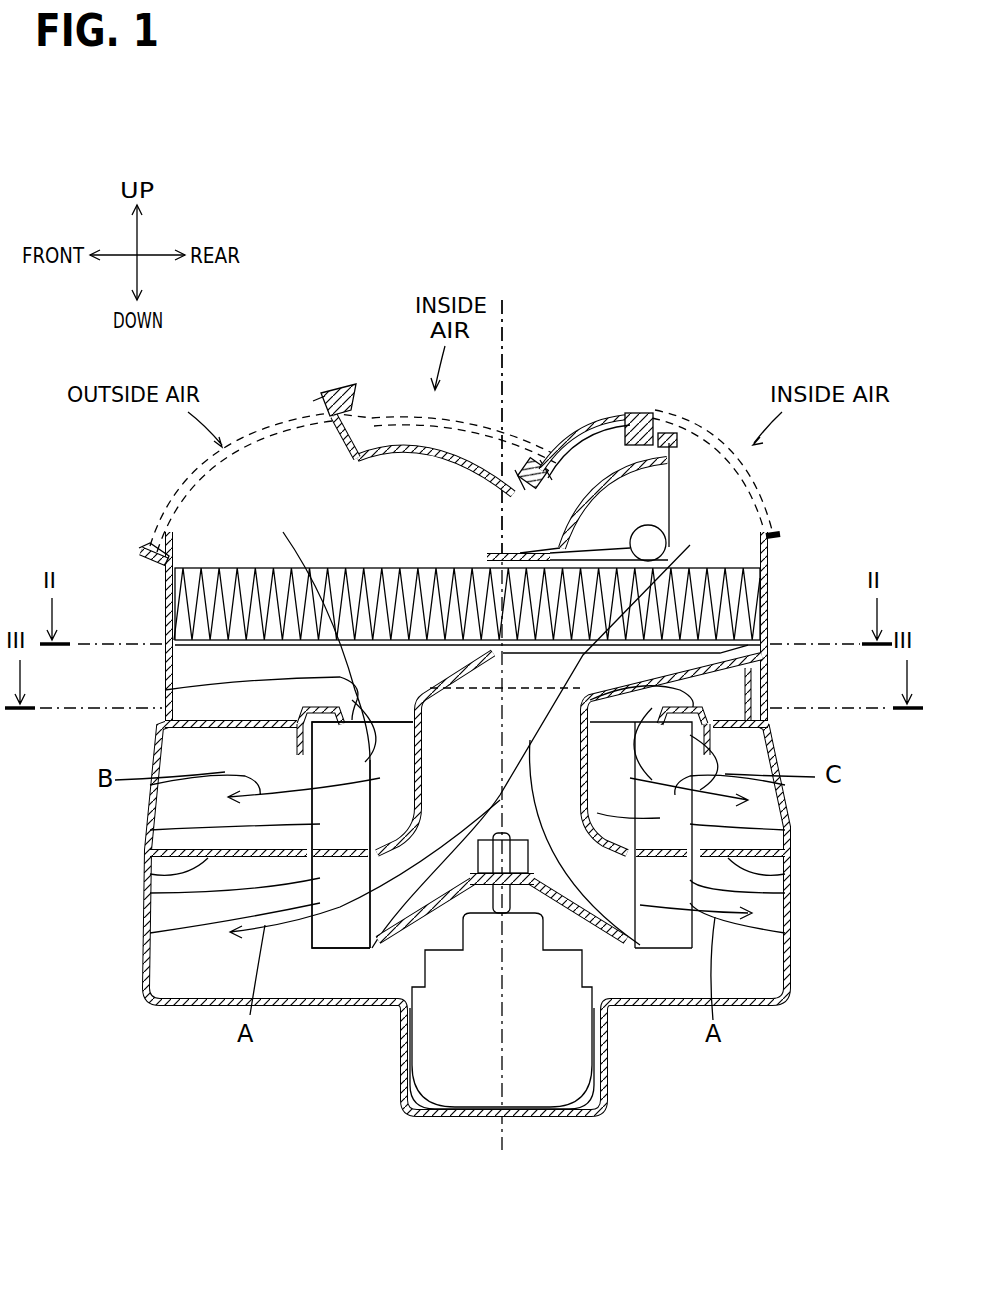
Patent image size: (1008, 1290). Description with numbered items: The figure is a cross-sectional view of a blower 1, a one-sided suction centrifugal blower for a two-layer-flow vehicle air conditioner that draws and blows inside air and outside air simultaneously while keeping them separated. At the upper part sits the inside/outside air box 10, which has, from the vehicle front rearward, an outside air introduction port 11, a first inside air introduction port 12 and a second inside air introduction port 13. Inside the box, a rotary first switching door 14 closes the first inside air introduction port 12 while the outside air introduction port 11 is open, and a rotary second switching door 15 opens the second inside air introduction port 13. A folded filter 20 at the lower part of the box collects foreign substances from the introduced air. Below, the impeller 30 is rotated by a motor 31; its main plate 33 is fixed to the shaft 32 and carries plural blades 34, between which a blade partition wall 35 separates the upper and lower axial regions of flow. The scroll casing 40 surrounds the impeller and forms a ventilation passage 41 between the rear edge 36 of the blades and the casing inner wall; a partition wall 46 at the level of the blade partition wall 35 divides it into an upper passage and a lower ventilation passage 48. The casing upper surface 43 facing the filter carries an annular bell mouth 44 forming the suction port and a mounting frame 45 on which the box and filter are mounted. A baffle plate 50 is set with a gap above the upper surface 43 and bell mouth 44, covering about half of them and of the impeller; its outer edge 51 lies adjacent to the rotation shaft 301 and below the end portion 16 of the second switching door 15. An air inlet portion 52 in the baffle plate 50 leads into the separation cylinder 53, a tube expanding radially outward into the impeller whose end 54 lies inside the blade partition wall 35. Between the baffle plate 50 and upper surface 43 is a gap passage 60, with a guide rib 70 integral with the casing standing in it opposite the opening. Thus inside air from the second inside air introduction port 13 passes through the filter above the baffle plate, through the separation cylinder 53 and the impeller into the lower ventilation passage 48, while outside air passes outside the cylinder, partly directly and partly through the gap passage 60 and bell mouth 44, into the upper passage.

The blower 1 is at (343, 225).
The inside/outside air box 10 is at (645, 415).
The outside air introduction port 11 is at (270, 428).
The first inside air introduction port 12 is at (388, 402).
The second inside air introduction port 13 is at (735, 418).
The first switching door 14 is at (420, 445).
The second switching door 15 is at (622, 420).
The end portion 16 is at (548, 510).
The filter 20 is at (210, 594).
The impeller 30 is at (340, 832).
The motor 31 is at (537, 1090).
The shaft 32 is at (513, 905).
The main plate 33 is at (398, 940).
The blades 34 is at (362, 824).
The blade partition wall 35 is at (320, 900).
The rear edge 36 is at (350, 922).
The casing 40 is at (150, 965).
The ventilation passage 41 is at (760, 845).
The upper surface 43 is at (165, 722).
The bell mouth 44 is at (260, 690).
The mounting frame 45 is at (165, 675).
The partition wall 46 is at (250, 862).
The lower ventilation passage 48 is at (740, 958).
The baffle plate 50 is at (736, 633).
The outer edge 51 is at (534, 470).
The air inlet portion 52 is at (745, 593).
The separation cylinder 53 is at (770, 835).
The end 54 is at (740, 882).
The gap passage 60 is at (712, 708).
The guide rib 70 is at (752, 690).
The rotation shaft 301 is at (502, 333).